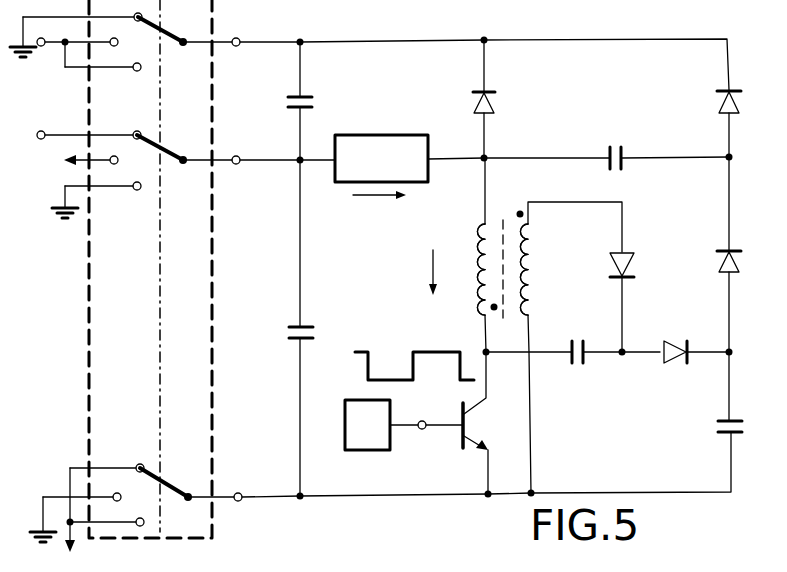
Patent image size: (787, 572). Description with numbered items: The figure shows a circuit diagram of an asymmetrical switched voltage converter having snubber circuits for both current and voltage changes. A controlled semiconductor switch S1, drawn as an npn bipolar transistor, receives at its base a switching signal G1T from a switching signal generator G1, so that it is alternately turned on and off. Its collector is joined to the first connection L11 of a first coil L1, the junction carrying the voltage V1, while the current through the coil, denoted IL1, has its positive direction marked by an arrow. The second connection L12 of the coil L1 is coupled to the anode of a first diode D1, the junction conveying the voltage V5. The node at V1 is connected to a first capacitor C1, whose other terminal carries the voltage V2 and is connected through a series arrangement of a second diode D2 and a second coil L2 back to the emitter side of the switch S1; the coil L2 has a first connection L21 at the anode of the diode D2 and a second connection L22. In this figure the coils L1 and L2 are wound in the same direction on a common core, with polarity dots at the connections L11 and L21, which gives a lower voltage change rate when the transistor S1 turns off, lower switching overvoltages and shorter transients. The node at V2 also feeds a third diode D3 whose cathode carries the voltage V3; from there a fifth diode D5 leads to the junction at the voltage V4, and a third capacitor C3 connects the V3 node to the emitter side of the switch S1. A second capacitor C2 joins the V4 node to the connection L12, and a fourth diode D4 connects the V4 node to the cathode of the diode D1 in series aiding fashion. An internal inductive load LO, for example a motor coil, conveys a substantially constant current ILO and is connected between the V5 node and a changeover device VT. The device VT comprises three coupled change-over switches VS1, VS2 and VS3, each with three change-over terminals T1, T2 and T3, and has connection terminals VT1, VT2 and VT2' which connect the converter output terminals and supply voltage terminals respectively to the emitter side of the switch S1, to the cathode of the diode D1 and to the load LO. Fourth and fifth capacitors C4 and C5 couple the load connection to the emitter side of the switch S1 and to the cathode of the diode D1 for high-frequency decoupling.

The changeover device VT is at (89, 258).
The change-over terminal T1 is at (142, 15).
The change-over terminal T2 is at (92, 271).
The change-over terminal T3 is at (136, 72).
The change-over switch VS1 is at (174, 478).
The change-over switch VS2 is at (172, 152).
The change-over switch VS3 is at (172, 55).
The connection terminal VT1 is at (239, 490).
The connection terminal VT2 is at (234, 23).
The connection terminal VT2' is at (241, 176).
The first capacitor C1 is at (578, 345).
The second capacitor C2 is at (615, 144).
The third capacitor C3 is at (717, 428).
The fourth capacitor C4 is at (287, 334).
The fifth capacitor C5 is at (287, 102).
The inductive load LO is at (385, 133).
The load current ILO is at (379, 205).
The coil current IL1 is at (432, 268).
The first coil L1 is at (477, 270).
The first connection of first coil L11 is at (477, 311).
The second connection of first coil L12 is at (477, 235).
The second coil L2 is at (532, 276).
The first connection of second coil L21 is at (532, 231).
The second connection of second coil L22 is at (532, 308).
The first semiconductor switching element D1 is at (495, 110).
The second semiconductor switching element D2 is at (634, 264).
The third semiconductor switching element D3 is at (672, 340).
The fourth semiconductor switching element D4 is at (718, 104).
The fifth diode D5 is at (720, 264).
The voltage V1 is at (501, 365).
The voltage V2 is at (622, 357).
The voltage V3 is at (728, 357).
The voltage V4 is at (726, 161).
The voltage V5 is at (481, 162).
The switching signal generator G1 is at (383, 452).
The switching signal G1T is at (406, 383).
The controlled semiconductor switch S1 is at (461, 440).